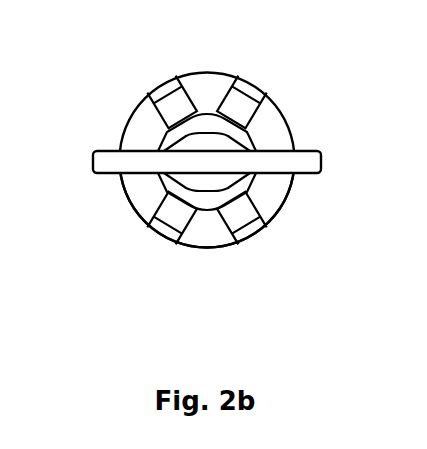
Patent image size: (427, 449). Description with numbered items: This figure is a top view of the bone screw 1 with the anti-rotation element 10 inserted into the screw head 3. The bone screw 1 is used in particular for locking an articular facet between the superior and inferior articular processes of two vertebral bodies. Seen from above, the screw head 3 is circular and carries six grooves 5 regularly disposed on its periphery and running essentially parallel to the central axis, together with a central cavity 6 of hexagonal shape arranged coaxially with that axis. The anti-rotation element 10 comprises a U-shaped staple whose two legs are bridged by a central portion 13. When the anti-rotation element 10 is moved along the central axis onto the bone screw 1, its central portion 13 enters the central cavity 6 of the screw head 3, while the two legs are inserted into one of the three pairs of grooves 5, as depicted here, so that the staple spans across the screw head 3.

The bone screw 1 is at (232, 75).
The screw head 3 is at (127, 190).
The grooves 5 is at (243, 100).
The central cavity 6 is at (165, 89).
The anti-rotation element 10 is at (160, 156).
The central portion 13 is at (283, 166).